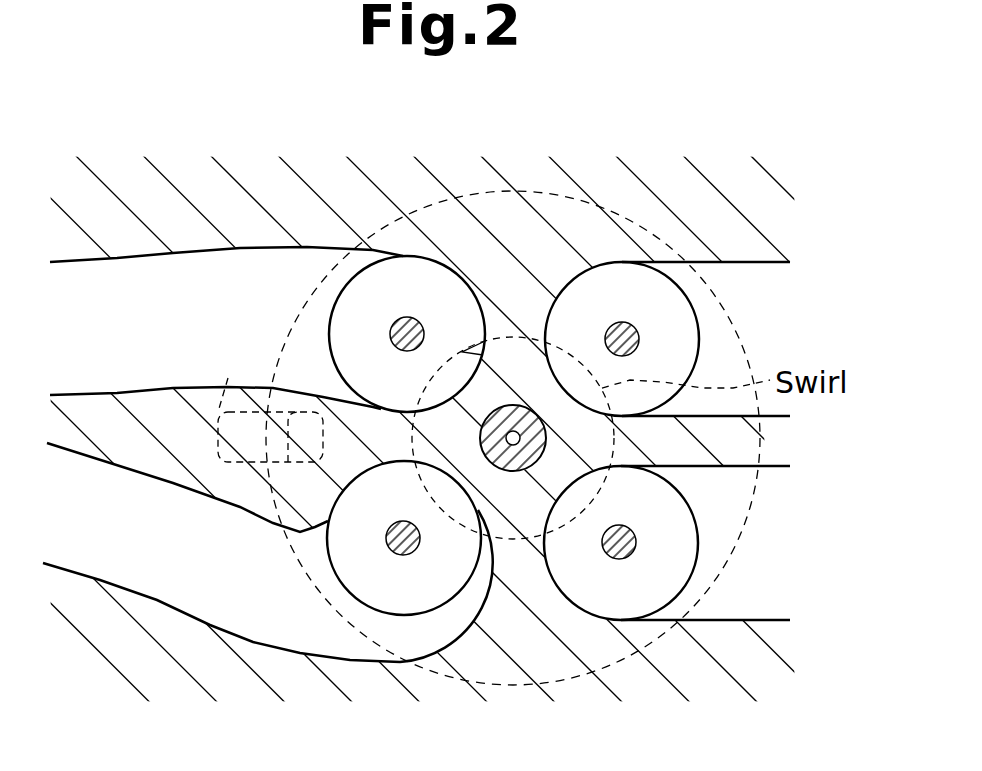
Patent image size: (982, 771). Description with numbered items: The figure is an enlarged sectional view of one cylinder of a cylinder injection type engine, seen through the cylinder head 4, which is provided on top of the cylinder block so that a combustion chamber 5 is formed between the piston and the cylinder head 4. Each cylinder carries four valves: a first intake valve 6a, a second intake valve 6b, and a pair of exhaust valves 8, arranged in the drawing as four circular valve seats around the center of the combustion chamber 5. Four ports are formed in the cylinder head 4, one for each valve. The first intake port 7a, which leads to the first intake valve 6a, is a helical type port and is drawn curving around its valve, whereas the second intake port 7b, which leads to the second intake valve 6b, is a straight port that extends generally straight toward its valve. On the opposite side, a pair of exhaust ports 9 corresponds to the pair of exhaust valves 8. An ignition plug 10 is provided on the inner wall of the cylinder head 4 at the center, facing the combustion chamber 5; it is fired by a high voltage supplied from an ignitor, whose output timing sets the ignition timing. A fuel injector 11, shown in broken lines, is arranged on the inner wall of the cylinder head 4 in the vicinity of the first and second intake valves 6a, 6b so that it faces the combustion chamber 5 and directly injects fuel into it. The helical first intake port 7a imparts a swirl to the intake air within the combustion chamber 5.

The cylinder head 4 is at (742, 192).
The combustion chamber 5 is at (522, 190).
The first intake valve 6a is at (415, 592).
The second intake valve 6b is at (430, 273).
The first intake port 7a is at (228, 607).
The second intake port 7b is at (205, 270).
The exhaust valves 8 is at (615, 273).
The exhaust ports 9 is at (750, 273).
The ignition plug 10 is at (533, 407).
The fuel injector 11 is at (265, 398).